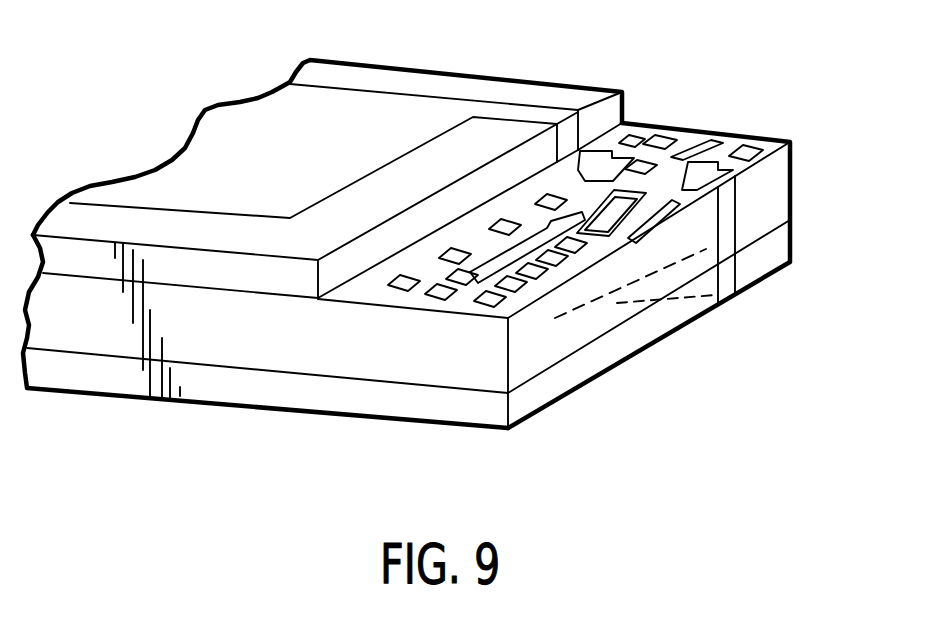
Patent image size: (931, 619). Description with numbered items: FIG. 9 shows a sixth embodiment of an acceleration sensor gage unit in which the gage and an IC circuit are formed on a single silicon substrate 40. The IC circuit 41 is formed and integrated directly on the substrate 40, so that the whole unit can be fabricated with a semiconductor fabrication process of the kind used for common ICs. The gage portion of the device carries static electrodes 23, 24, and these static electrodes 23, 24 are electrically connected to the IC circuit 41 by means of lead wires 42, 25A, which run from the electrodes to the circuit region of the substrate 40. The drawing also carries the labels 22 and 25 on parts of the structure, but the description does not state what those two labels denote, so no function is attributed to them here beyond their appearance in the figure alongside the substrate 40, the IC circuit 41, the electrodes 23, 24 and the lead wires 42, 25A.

The glass plate 22 is at (577, 95).
The static electrode 23 is at (250, 395).
The static electrode 24 is at (208, 118).
The buried conductor 25 is at (557, 318).
The lead wire 25A is at (725, 272).
The silicon substrate 40 is at (777, 192).
The IC circuit 41 is at (420, 297).
The lead wire 42 is at (503, 110).